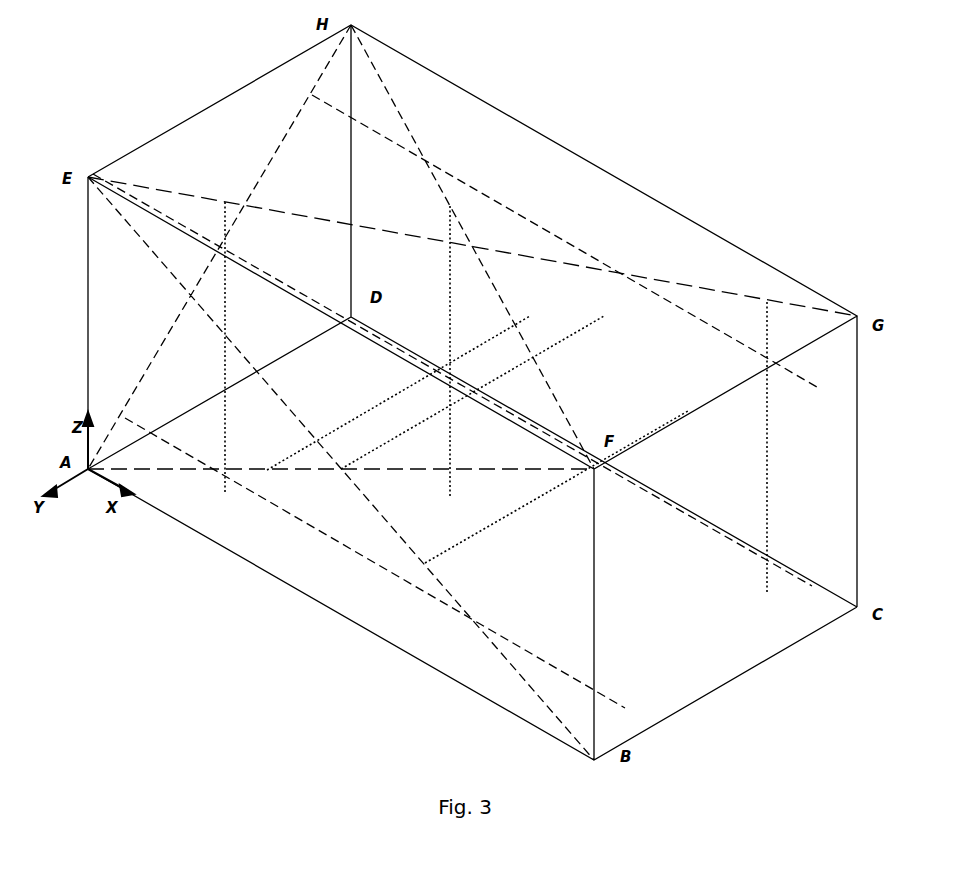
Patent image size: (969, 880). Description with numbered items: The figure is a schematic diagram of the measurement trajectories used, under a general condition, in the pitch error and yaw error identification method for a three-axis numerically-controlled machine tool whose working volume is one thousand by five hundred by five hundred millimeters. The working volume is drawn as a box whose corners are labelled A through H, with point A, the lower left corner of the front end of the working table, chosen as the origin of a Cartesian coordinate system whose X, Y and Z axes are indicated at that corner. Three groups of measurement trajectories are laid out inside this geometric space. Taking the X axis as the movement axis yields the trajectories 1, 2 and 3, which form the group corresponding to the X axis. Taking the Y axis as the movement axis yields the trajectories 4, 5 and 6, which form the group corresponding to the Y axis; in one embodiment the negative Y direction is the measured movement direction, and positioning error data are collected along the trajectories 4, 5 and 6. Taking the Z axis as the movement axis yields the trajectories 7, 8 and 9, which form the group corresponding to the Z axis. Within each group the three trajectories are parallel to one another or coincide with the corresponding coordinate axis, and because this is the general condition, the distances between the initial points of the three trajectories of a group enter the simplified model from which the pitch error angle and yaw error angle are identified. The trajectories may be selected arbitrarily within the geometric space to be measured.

The trajectory 1 is at (564, 241).
The trajectory 2 is at (375, 552).
The trajectory 3 is at (452, 380).
The trajectory 4 is at (397, 393).
The trajectory 5 is at (472, 392).
The trajectory 6 is at (556, 495).
The trajectory 7 is at (209, 348).
The trajectory 8 is at (463, 352).
The trajectory 9 is at (782, 447).